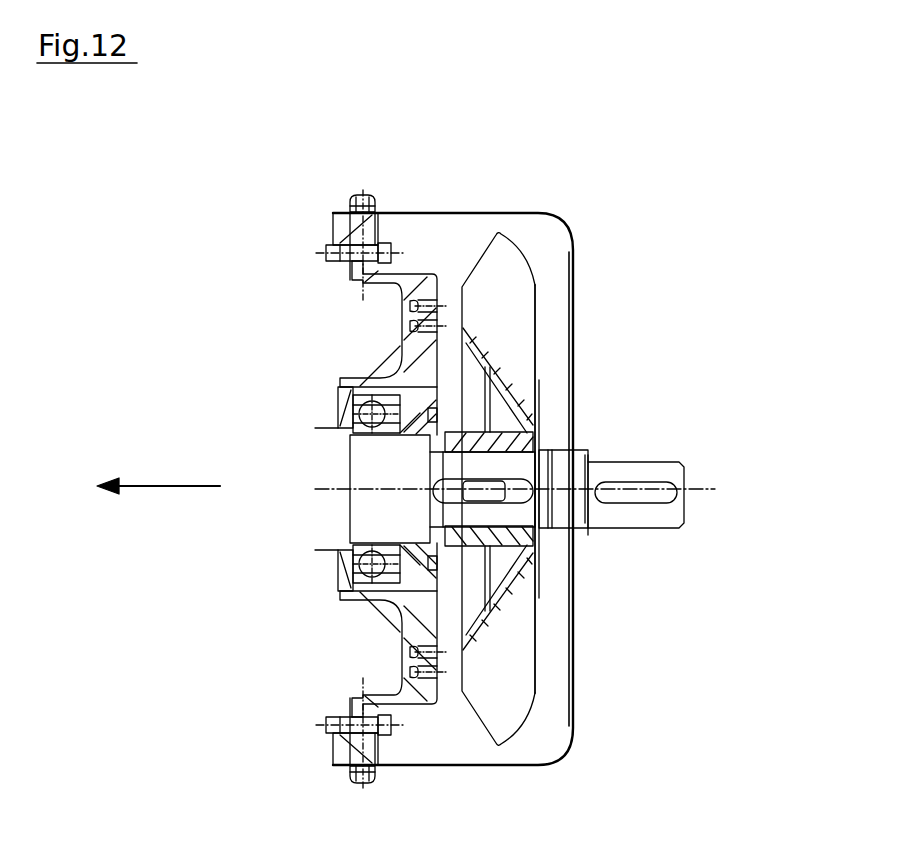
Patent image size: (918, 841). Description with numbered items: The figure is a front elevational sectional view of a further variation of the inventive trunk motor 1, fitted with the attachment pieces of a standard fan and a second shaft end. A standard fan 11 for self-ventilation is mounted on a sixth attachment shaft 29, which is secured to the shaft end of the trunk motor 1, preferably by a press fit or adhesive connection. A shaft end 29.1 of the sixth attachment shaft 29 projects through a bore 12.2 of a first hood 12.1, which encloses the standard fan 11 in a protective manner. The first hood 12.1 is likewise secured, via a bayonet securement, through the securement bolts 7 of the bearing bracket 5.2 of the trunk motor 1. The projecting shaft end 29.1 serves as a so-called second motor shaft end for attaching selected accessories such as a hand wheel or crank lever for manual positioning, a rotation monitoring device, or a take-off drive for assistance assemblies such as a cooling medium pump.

The trunk motor 1 is at (52, 503).
The securement bolts 7 is at (357, 196).
The bearing bracket 5.2 is at (413, 366).
The standard fan 11 is at (522, 378).
The first hood 12.1 is at (481, 212).
The bore 12.2 is at (582, 448).
The sixth attachment shaft 29 is at (575, 527).
The shaft end 29.1 is at (620, 517).